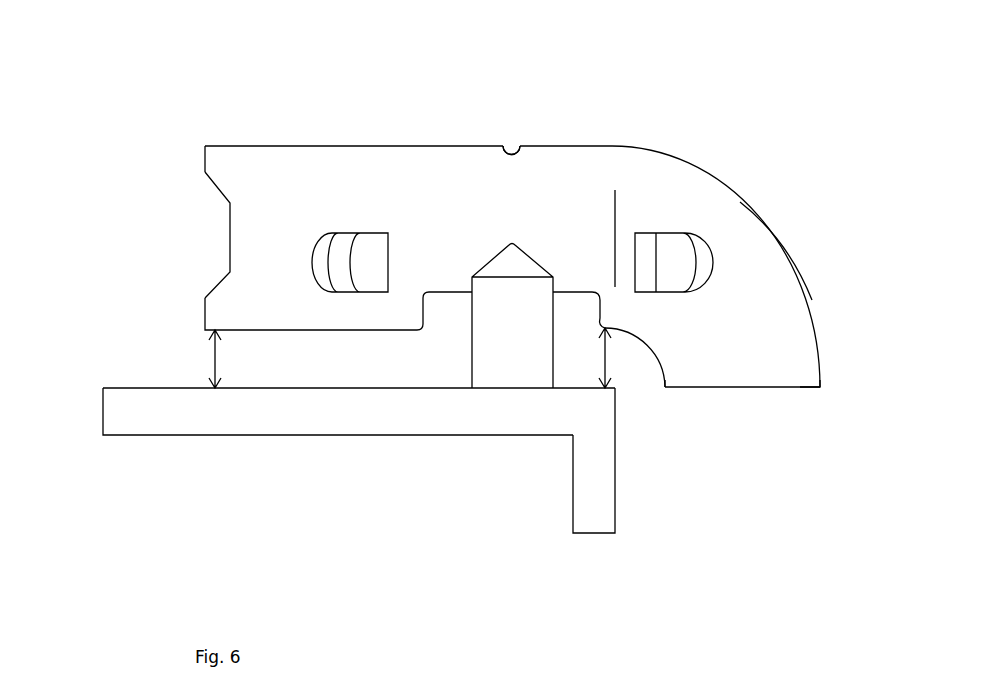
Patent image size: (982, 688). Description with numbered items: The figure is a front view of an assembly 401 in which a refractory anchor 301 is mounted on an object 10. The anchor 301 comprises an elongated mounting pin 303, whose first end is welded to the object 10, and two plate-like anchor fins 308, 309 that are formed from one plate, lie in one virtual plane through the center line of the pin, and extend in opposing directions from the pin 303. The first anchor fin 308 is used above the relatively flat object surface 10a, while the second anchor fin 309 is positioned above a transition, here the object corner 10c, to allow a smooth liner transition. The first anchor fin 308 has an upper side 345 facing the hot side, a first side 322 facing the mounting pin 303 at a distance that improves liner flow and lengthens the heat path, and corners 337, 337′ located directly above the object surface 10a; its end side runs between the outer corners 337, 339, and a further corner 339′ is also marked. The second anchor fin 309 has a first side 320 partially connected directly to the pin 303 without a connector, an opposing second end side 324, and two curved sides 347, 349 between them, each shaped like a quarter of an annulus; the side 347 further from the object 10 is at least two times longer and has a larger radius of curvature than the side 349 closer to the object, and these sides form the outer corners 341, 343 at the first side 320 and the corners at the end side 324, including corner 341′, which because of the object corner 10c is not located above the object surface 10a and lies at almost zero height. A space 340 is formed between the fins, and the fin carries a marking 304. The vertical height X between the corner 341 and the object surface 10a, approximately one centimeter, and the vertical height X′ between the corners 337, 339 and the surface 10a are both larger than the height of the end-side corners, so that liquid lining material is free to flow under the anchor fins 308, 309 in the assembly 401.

The assembly 401 is at (121, 106).
The refractory anchor 301 is at (765, 146).
The upper side of anchor fin 345 is at (344, 146).
The space 340 is at (523, 133).
The notch edge 339′ is at (505, 148).
The outer corner 343 is at (520, 148).
The second anchor fin 309 is at (652, 163).
The side of anchor fin 347 is at (785, 247).
The second end side 324 is at (747, 388).
The outer corner 341′ is at (668, 388).
The side of anchor fin 349 is at (655, 347).
The outer corner 341 is at (605, 328).
The first side 320 is at (601, 320).
The elongated mounting pin 303 is at (507, 343).
The first side 322 is at (443, 291).
The corner 337′ is at (420, 328).
The outer corner 337 is at (207, 328).
The first anchor fin 308 is at (263, 226).
The outer corner 339 is at (205, 146).
The marking 304 is at (725, 349).
The vertical height X′ is at (226, 359).
The vertical height X is at (611, 358).
The object 10 is at (298, 413).
The object surface 10a is at (117, 388).
The object corner 10c is at (613, 392).